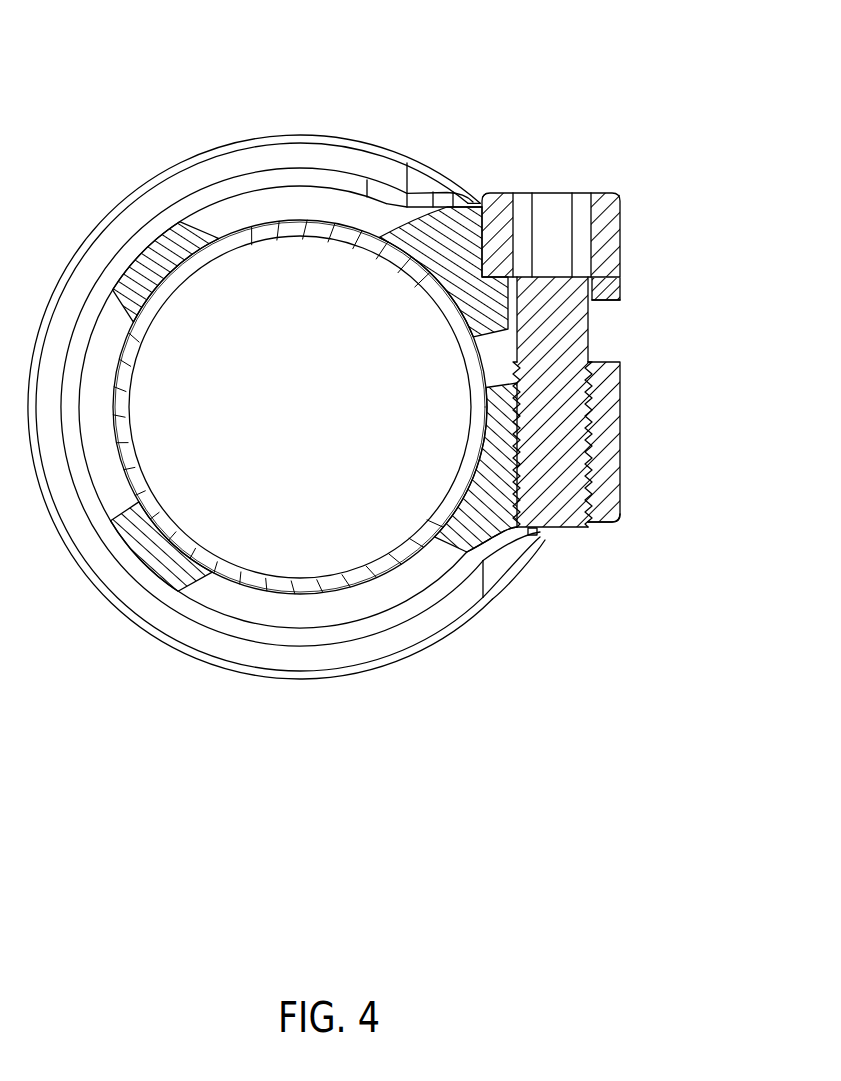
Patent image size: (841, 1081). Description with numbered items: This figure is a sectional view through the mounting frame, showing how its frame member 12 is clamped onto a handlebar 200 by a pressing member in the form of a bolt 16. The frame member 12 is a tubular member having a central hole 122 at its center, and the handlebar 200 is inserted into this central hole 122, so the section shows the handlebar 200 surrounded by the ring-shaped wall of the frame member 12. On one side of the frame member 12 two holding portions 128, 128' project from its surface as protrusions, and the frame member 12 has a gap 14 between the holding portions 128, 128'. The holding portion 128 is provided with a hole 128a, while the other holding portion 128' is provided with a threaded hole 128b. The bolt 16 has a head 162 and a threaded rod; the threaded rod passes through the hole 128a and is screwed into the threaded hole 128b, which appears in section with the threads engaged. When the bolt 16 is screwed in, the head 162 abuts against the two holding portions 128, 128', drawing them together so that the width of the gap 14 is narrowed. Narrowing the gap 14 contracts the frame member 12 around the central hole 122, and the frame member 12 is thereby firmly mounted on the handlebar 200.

The frame member 12 is at (392, 150).
The handlebar 200 is at (271, 222).
The central hole 122 is at (233, 231).
The gap 14 is at (605, 345).
The bolt 16 is at (610, 292).
The head 162 is at (615, 213).
The holding portion 128 is at (666, 287).
The hole 128a is at (590, 303).
The holding portion 128' is at (666, 442).
The threaded hole 128b is at (618, 492).